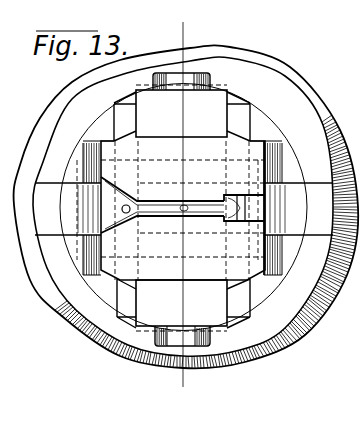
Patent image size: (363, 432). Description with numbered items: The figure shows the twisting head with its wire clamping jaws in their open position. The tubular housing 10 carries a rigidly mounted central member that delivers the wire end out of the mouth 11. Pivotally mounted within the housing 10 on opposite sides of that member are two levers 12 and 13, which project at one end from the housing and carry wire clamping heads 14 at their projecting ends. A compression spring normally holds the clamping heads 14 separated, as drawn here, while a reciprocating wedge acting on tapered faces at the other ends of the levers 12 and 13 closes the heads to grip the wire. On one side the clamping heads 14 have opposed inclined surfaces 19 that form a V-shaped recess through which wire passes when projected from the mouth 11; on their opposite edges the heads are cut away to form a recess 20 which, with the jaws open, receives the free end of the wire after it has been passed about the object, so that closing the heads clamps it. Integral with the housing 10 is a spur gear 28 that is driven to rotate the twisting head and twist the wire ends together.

The tubular housing 10 is at (290, 300).
The mouth 11 is at (101, 208).
The lever 12 is at (203, 387).
The lever 13 is at (125, 312).
The wire clamping head 14 is at (141, 205).
The inclined surface 19 is at (139, 201).
The recess 20 is at (238, 213).
The spur gear 28 is at (292, 329).